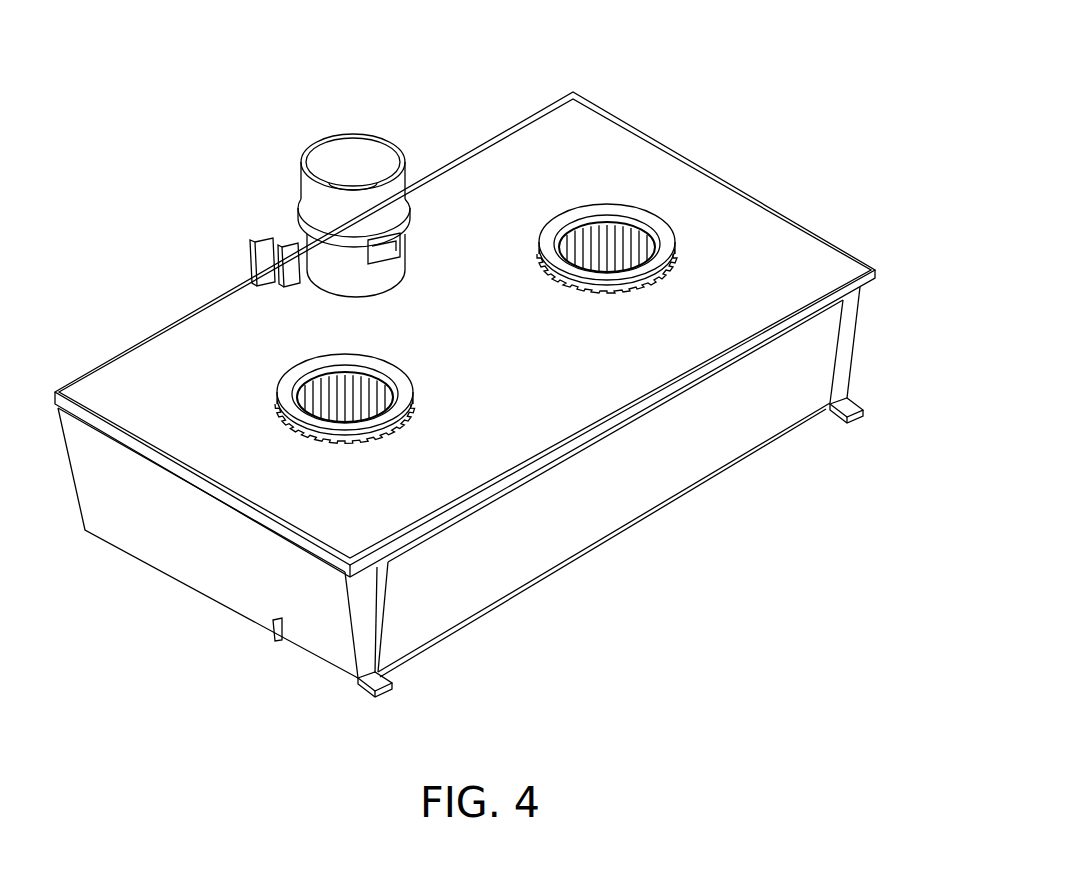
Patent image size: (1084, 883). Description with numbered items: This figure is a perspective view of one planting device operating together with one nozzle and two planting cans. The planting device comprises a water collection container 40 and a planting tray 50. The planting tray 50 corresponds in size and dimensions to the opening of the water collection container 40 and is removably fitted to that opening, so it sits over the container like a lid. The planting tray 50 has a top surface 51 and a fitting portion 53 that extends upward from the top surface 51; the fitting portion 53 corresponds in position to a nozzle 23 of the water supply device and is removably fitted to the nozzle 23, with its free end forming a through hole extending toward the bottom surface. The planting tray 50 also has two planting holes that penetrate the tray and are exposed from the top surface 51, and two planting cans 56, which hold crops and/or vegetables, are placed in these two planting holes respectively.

The nozzle 23 is at (352, 115).
The water collection container 40 is at (868, 347).
The planting tray 50 is at (612, 104).
The top surface 51 is at (735, 243).
The fitting portion 53 is at (312, 247).
The planting can 56 is at (280, 378).